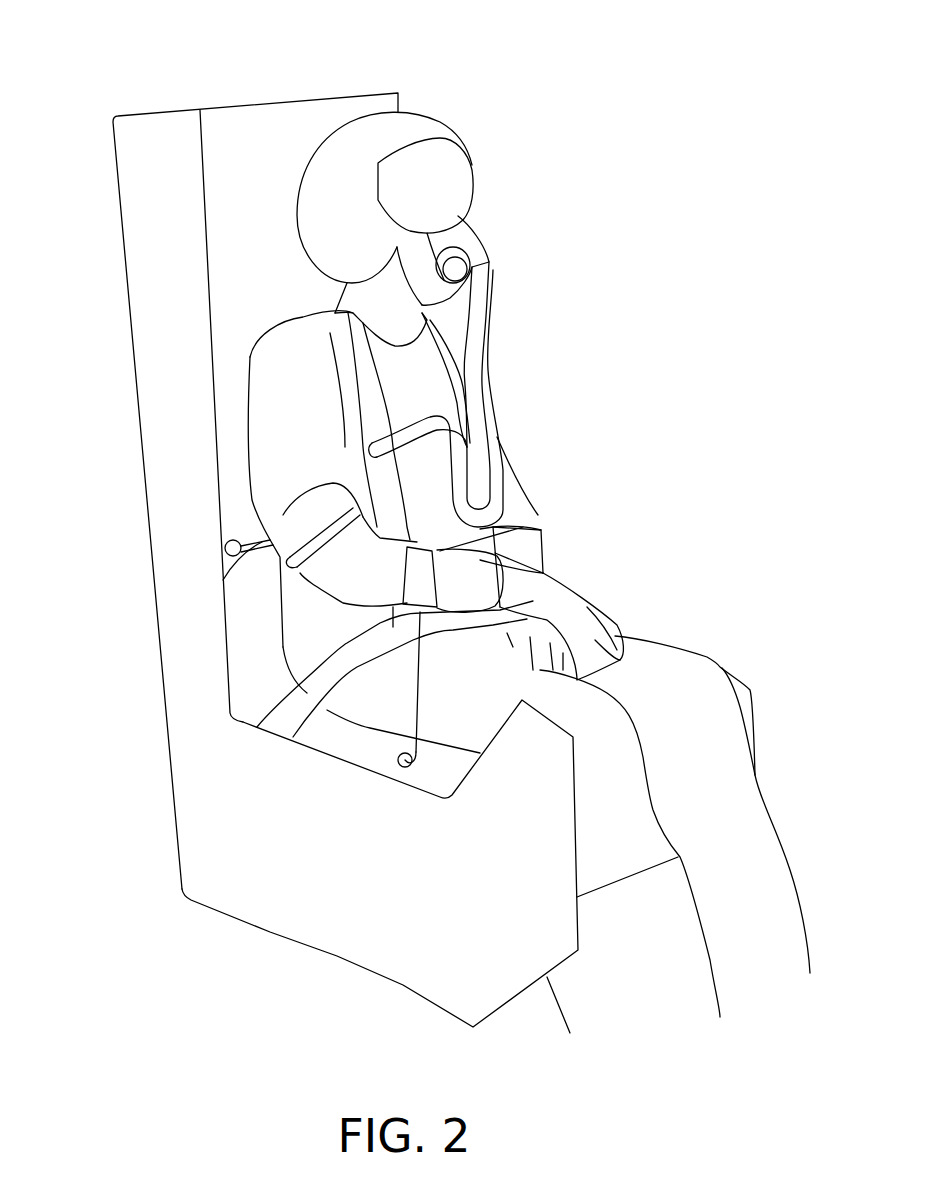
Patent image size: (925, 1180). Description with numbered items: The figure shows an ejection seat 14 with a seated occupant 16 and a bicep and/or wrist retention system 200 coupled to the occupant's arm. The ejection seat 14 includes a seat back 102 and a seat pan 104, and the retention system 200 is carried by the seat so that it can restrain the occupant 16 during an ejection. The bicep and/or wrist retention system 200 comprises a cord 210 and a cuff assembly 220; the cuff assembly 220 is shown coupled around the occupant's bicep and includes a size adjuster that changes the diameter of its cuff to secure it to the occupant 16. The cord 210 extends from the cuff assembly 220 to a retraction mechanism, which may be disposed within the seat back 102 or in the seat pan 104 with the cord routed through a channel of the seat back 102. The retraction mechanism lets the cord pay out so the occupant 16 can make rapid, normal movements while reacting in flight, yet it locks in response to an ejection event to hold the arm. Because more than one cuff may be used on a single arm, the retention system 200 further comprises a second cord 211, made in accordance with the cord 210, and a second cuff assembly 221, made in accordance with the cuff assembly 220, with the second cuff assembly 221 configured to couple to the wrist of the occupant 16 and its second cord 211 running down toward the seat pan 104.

The ejection seat 14 is at (263, 128).
The seat back 102 is at (177, 193).
The seat pan 104 is at (355, 892).
The occupant 16 is at (513, 523).
The bicep and/or wrist retention system 200 is at (210, 558).
The cord 210 is at (283, 513).
The second cord 211 is at (410, 717).
The cuff assembly 220 is at (303, 513).
The second cuff assembly 221 is at (490, 557).